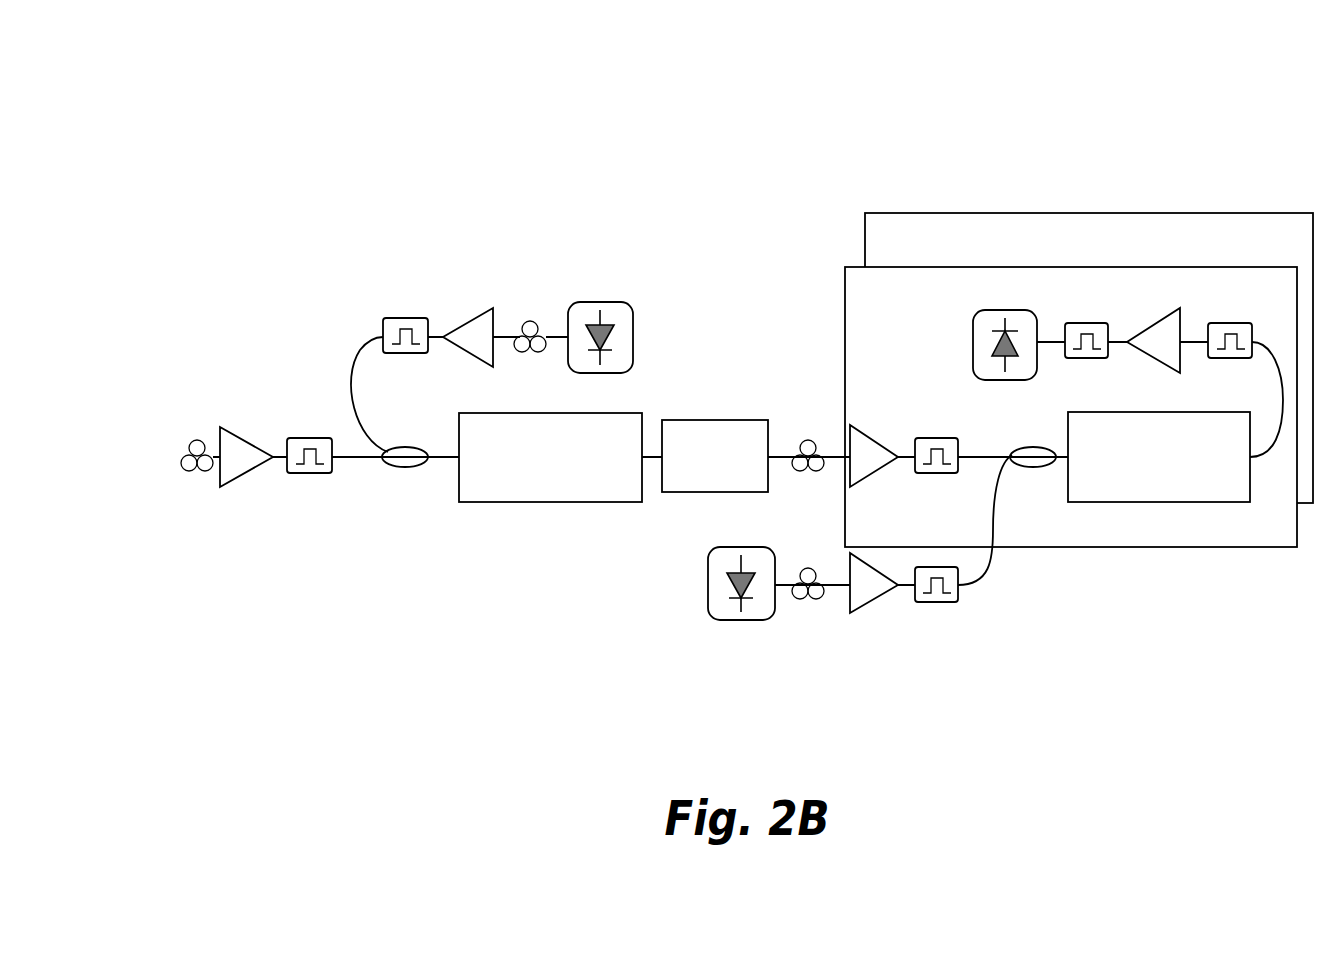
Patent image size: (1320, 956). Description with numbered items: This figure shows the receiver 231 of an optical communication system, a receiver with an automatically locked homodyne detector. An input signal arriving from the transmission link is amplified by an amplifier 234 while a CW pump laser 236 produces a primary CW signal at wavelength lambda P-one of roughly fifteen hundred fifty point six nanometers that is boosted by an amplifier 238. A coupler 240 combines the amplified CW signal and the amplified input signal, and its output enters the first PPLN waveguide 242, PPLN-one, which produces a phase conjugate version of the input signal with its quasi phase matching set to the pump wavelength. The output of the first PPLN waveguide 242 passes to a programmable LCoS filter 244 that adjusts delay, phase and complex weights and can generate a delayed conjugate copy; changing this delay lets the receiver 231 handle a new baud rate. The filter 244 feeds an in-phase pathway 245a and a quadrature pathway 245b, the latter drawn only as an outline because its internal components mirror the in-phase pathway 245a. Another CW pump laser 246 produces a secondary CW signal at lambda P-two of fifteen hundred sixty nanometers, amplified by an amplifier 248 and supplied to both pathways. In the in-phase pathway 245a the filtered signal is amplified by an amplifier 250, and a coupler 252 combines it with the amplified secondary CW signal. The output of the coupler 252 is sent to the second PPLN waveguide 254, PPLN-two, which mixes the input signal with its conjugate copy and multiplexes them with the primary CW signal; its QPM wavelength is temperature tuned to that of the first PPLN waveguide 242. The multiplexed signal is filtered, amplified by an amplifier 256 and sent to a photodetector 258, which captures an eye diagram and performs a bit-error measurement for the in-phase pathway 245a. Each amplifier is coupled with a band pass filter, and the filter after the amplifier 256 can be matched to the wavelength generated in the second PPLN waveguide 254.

The receiver 231 is at (306, 101).
The amplifier 234 is at (245, 432).
The CW pump laser 236 is at (600, 302).
The amplifier 238 is at (493, 310).
The coupler 240 is at (402, 467).
The first PPLN waveguide 242 is at (497, 502).
The filter 244 is at (700, 492).
The in-phase pathway 245a is at (1195, 267).
The quadrature pathway 245b is at (1222, 213).
The CW pump laser 246 is at (735, 620).
The amplifier 248 is at (856, 607).
The amplifier 250 is at (880, 440).
The coupler 252 is at (1034, 468).
The second PPLN waveguide 254 is at (1145, 502).
The amplifier 256 is at (1178, 312).
The photodetector 258 is at (1010, 310).